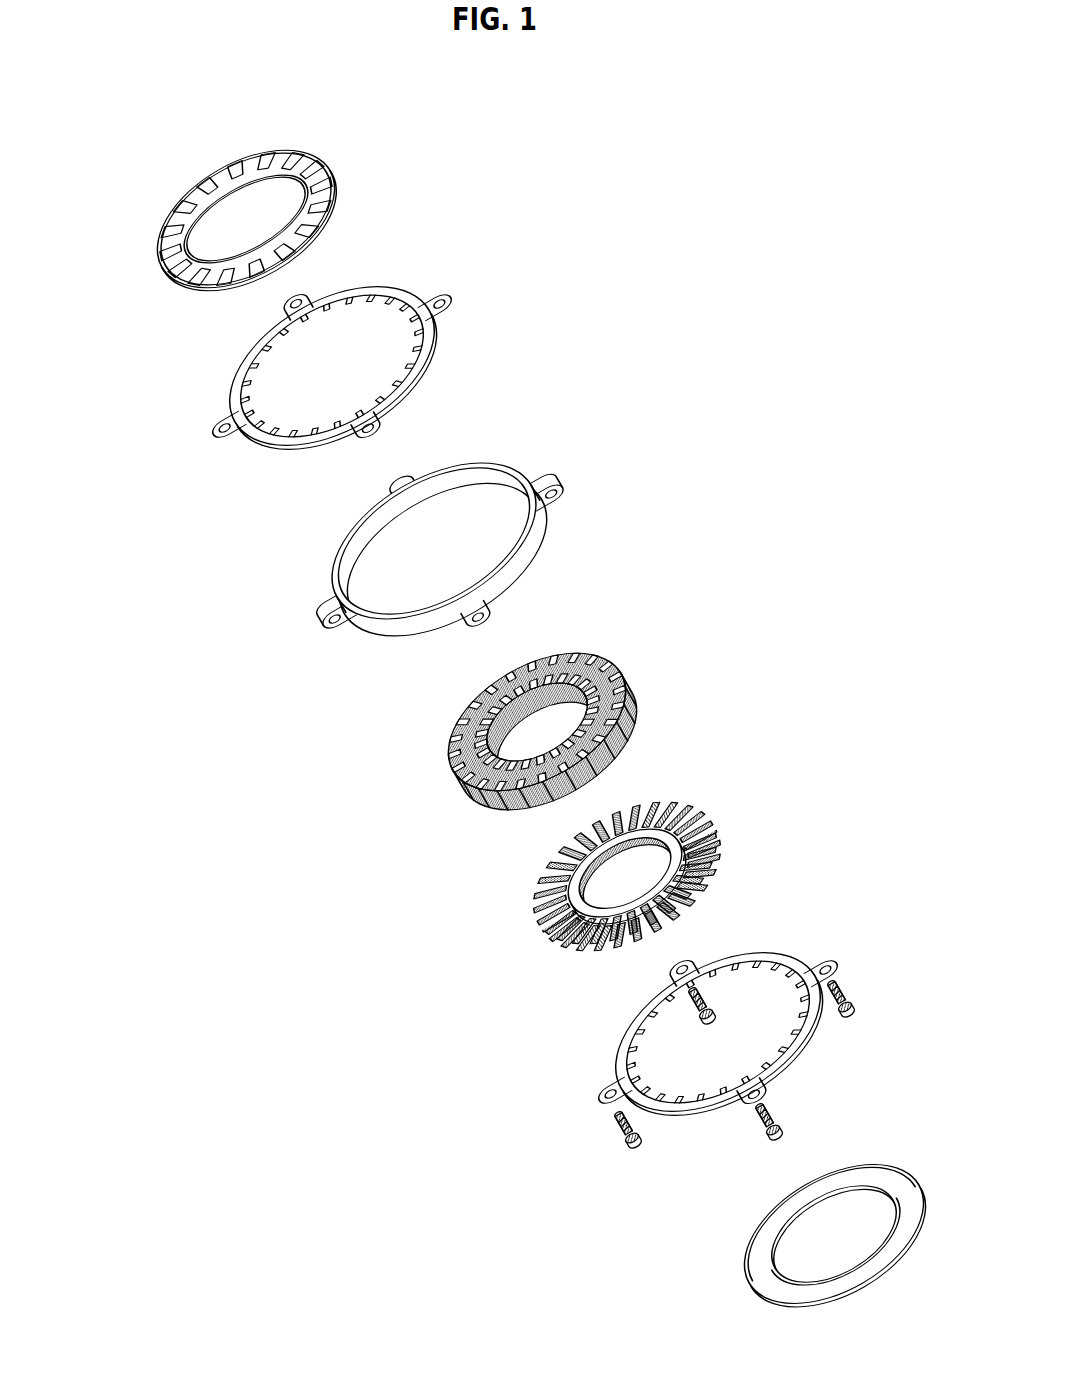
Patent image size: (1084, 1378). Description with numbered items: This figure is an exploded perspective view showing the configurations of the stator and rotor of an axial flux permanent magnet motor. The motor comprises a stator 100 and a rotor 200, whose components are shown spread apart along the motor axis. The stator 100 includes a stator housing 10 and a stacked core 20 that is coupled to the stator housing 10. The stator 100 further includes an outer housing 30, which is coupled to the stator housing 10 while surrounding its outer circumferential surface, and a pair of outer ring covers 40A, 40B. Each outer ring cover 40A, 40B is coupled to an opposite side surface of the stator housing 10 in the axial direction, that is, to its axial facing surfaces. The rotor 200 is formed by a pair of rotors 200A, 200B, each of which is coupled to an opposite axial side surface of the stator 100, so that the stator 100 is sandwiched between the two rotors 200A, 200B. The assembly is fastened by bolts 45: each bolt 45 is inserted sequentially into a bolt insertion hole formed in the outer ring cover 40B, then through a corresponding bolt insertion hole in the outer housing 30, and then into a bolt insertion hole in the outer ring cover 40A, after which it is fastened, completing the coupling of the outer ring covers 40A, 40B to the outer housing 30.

The rotor 200A is at (140, 276).
The outer ring cover 40A is at (200, 444).
The outer housing 30 is at (292, 630).
The stator 100 is at (490, 291).
The stacked core 20 is at (432, 785).
The stator housing 10 is at (508, 928).
The outer ring cover 40B is at (575, 1108).
The bolt 45 is at (633, 1150).
The rotor 200B is at (734, 1291).
The rotor 200 is at (108, 695).